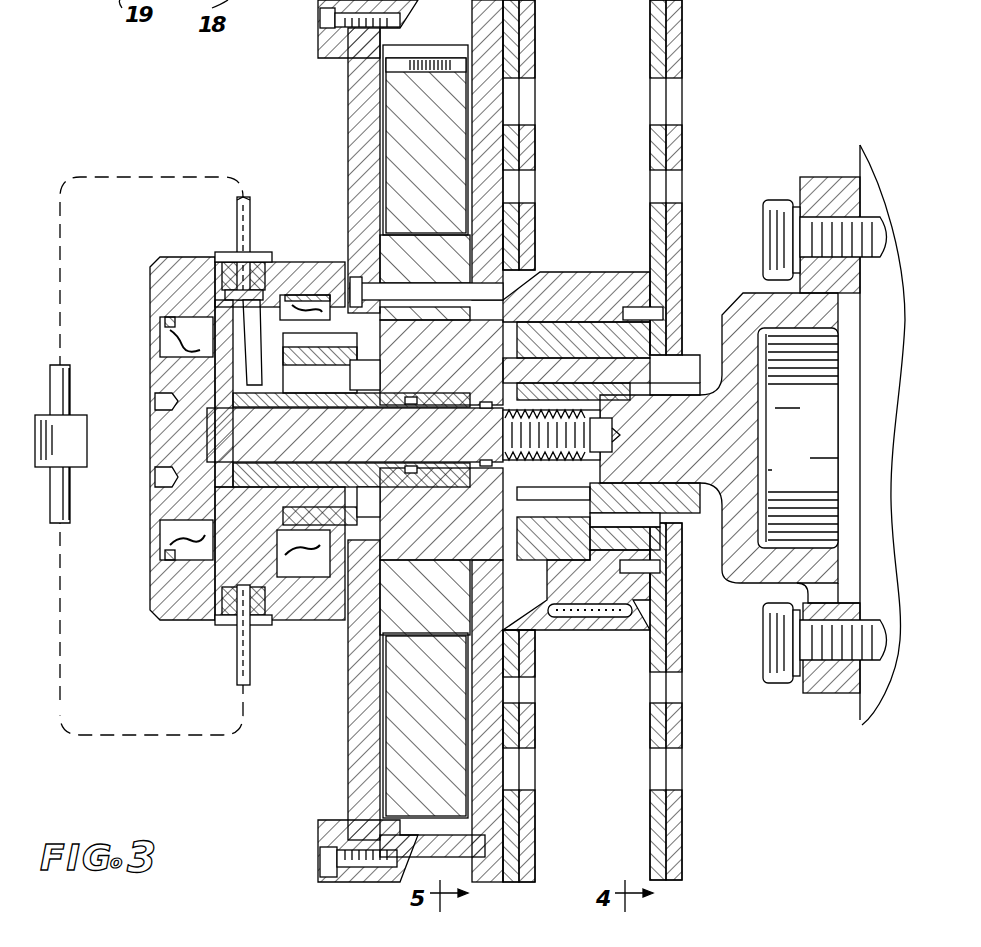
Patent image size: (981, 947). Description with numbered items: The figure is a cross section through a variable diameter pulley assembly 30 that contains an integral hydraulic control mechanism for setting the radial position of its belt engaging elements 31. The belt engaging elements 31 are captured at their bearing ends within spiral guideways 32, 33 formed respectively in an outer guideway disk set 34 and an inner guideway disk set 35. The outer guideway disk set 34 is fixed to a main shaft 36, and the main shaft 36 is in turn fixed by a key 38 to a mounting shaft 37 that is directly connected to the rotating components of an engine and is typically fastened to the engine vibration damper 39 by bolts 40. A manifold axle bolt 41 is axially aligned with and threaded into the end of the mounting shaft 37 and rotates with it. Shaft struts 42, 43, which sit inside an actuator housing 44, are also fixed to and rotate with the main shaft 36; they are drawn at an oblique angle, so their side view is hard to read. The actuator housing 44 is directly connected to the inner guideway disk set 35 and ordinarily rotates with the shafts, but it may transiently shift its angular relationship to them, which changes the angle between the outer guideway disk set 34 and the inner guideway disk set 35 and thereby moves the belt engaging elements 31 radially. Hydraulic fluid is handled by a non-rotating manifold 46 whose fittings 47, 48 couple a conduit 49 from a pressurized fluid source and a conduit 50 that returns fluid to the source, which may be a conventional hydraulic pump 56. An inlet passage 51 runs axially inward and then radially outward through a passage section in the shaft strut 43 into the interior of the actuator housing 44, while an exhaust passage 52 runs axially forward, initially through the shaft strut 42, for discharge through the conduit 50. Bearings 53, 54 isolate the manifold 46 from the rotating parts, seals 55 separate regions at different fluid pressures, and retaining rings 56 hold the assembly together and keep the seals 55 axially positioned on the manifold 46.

The pulley assembly 30 is at (283, 158).
The belt engaging elements 31 is at (578, 292).
The spiral guideway 32 is at (519, 103).
The spiral guideway 33 is at (530, 115).
The outer guideway disk set 34 is at (692, 52).
The inner guideway disk set 35 is at (643, 55).
The main shaft 36 is at (459, 367).
The mounting shaft 37 is at (704, 452).
The key 38 is at (640, 393).
The engine vibration damper 39 is at (860, 160).
The bolts 40 is at (785, 205).
The manifold axle bolt 41 is at (172, 437).
The shaft strut 42 is at (441, 127).
The shaft strut 43 is at (426, 665).
The actuator housing 44 is at (348, 112).
The manifold 46 is at (175, 275).
The fitting 47 is at (218, 626).
The fitting 48 is at (260, 253).
The conduit 49 is at (238, 660).
The conduit 50 is at (237, 215).
The inlet passage 51 is at (232, 460).
The exhaust passage 52 is at (233, 312).
The bearing 53 is at (300, 425).
The bearing 54 is at (303, 358).
The seals 55 is at (360, 330).
The retaining rings 56 is at (88, 420).